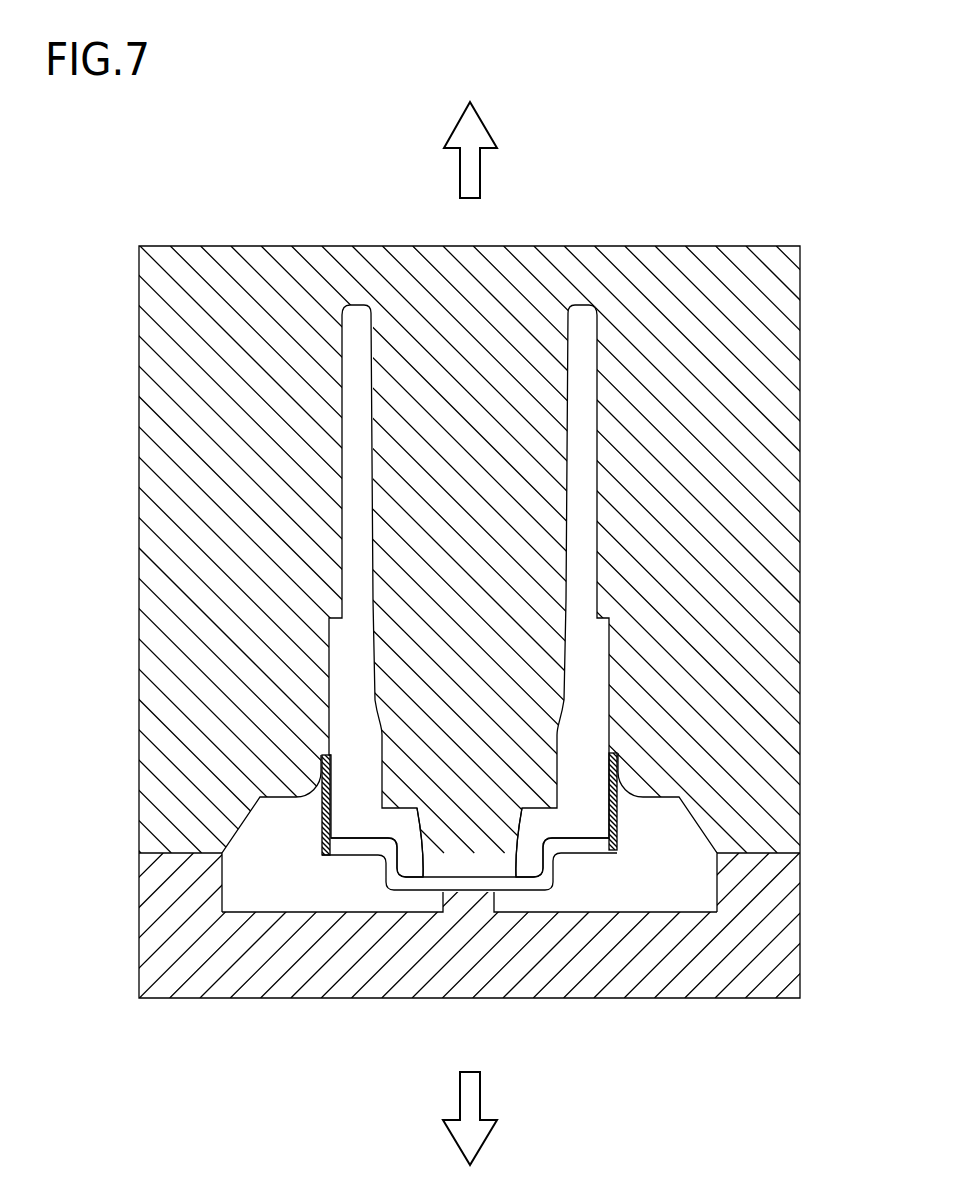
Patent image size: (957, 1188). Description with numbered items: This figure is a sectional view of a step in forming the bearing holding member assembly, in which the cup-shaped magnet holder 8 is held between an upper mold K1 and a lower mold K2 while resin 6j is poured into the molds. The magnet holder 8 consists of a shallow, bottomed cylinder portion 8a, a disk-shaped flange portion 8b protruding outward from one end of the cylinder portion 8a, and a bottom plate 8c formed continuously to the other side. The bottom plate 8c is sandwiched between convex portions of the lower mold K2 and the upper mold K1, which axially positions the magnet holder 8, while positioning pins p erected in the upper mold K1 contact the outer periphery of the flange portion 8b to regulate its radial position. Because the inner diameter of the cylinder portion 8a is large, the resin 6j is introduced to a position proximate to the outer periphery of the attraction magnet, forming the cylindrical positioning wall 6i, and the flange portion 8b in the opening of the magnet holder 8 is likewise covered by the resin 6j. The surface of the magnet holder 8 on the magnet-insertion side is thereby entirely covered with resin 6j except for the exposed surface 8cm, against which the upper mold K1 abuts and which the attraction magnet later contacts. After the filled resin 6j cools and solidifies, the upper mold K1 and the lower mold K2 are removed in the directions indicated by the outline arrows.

The upper mold K1 is at (735, 252).
The lower mold K2 is at (733, 987).
The resin 6j is at (587, 692).
The cylindrical positioning wall 6i is at (513, 870).
The magnet holder 8 is at (469, 941).
The cylinder portion 8a is at (564, 873).
The flange portion 8b is at (359, 848).
The bottom plate 8c is at (426, 883).
The exposed surface 8cm is at (472, 876).
The positioning pins p is at (322, 822).